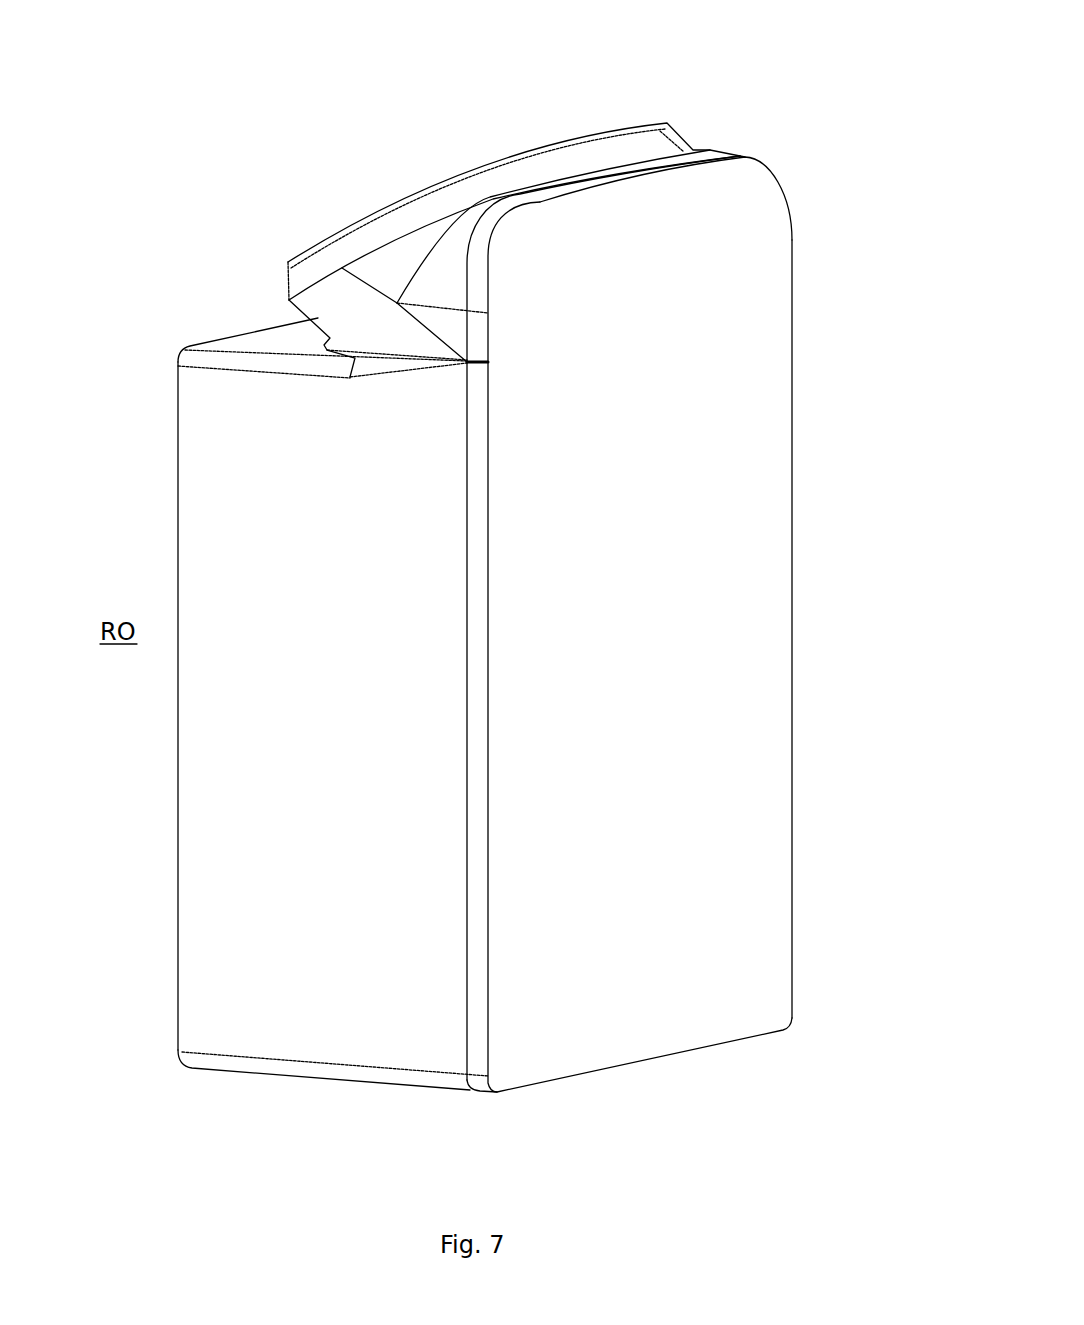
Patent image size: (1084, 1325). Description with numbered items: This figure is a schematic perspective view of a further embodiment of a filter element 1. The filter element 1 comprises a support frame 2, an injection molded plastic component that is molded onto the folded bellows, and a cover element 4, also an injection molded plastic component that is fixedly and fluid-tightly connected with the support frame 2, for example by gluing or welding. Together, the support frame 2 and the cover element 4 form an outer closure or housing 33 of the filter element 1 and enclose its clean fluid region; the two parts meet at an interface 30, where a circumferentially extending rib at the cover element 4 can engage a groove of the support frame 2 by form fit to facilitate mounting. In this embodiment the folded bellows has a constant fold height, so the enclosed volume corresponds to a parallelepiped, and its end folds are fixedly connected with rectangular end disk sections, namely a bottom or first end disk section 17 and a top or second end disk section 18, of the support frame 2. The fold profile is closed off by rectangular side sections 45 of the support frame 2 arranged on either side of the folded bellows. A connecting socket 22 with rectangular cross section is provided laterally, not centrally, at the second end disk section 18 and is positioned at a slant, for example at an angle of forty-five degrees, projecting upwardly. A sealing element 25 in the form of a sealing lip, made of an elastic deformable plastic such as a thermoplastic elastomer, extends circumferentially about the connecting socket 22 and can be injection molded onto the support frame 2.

The filter element 1 is at (474, 112).
The support frame 2 is at (219, 330).
The cover element 4 is at (760, 386).
The first end disk section 17 is at (268, 1077).
The second end disk section 18 is at (265, 343).
The connecting socket 22 is at (385, 263).
The sealing element 25 is at (444, 196).
The interface 30 is at (468, 850).
The housing 33 is at (805, 621).
The side sections 45 is at (203, 930).